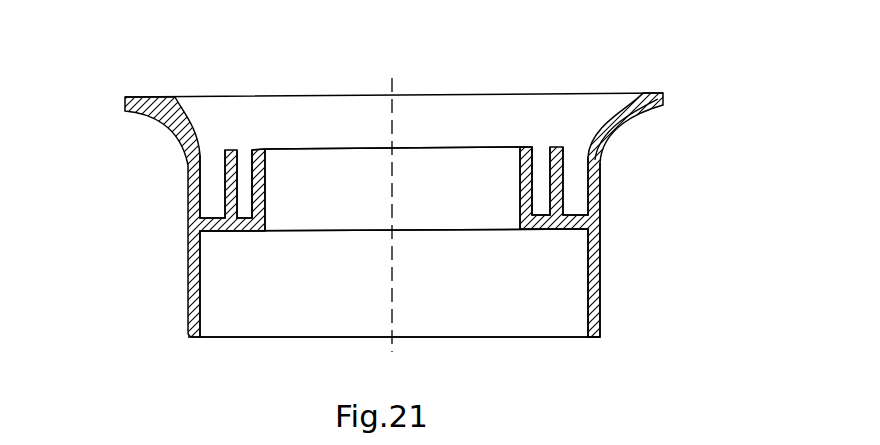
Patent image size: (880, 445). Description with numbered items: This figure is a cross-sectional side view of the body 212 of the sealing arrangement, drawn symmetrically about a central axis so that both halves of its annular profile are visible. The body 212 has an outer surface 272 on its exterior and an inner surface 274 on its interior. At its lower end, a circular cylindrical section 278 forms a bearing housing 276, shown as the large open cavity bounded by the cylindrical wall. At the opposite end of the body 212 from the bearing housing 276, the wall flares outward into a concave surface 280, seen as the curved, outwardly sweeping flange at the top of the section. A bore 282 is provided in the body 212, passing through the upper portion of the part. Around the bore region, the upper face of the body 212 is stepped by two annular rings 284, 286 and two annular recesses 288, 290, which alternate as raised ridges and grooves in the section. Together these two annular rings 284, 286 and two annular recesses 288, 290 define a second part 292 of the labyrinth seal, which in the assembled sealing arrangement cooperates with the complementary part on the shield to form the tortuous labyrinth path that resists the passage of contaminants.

The body 212 is at (690, 167).
The outer surface 272 is at (185, 268).
The inner surface 274 is at (577, 140).
The bearing housing 276 is at (553, 310).
The circular cylindrical section 278 is at (595, 273).
The concave surface 280 is at (618, 127).
The bore 282 is at (517, 183).
The annular ring 284 is at (243, 162).
The annular ring 286 is at (264, 147).
The annular recess 288 is at (212, 177).
The annular recess 290 is at (256, 151).
The second part of the labyrinth seal 292 is at (542, 137).